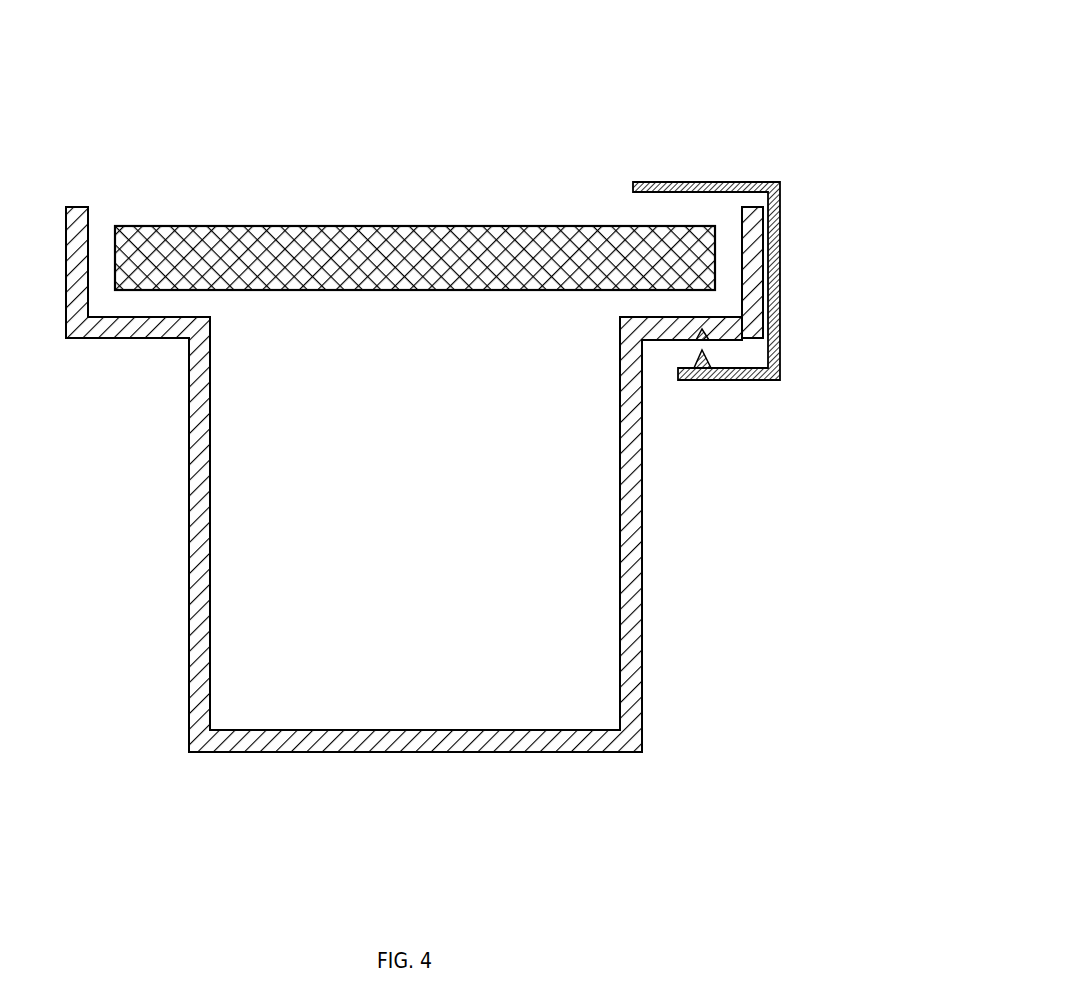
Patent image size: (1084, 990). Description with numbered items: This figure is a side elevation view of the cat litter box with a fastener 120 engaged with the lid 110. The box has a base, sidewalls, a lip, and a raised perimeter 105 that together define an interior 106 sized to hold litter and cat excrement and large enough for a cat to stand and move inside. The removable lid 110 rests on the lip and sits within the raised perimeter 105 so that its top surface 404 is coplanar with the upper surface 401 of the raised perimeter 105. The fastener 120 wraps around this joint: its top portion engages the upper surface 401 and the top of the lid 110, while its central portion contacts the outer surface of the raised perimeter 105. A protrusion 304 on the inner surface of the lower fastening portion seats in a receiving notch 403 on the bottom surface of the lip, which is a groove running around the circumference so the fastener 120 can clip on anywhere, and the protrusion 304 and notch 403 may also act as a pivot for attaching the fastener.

The interior 106 is at (438, 660).
The top surface of the lid 404 is at (423, 227).
The removable lid 110 is at (287, 227).
The fastener 120 is at (700, 182).
The upper surface of the raised perimeter 401 is at (760, 206).
The raised perimeter 105 is at (755, 242).
The receiving notch 403 is at (704, 334).
The protrusion 304 is at (705, 353).